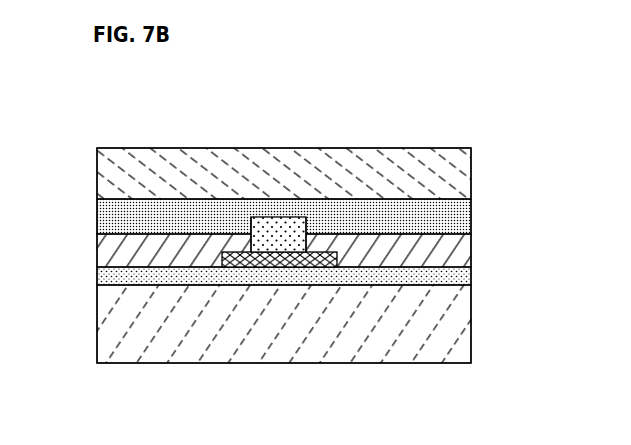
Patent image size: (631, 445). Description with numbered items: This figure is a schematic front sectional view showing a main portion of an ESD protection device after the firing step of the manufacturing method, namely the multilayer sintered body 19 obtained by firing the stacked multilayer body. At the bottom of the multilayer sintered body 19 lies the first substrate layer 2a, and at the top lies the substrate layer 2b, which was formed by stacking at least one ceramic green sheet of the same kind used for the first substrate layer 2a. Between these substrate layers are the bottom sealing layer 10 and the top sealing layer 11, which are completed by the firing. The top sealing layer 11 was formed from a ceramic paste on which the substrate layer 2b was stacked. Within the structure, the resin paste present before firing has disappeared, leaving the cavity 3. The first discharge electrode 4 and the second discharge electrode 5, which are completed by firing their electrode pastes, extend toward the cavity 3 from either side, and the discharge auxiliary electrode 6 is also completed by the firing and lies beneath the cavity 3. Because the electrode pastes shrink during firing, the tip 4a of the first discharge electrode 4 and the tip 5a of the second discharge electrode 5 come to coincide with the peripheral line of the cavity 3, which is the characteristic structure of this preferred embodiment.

The multilayer sintered body 19 is at (150, 147).
The first substrate layer 2a is at (471, 327).
The substrate layer 2b is at (471, 169).
The cavity 3 is at (277, 222).
The first discharge electrode 4 is at (112, 248).
The tip 4a is at (265, 228).
The second discharge electrode 5 is at (471, 247).
The tip 5a is at (293, 233).
The discharge auxiliary electrode 6 is at (285, 262).
The bottom sealing layer 10 is at (471, 277).
The top sealing layer 11 is at (471, 210).